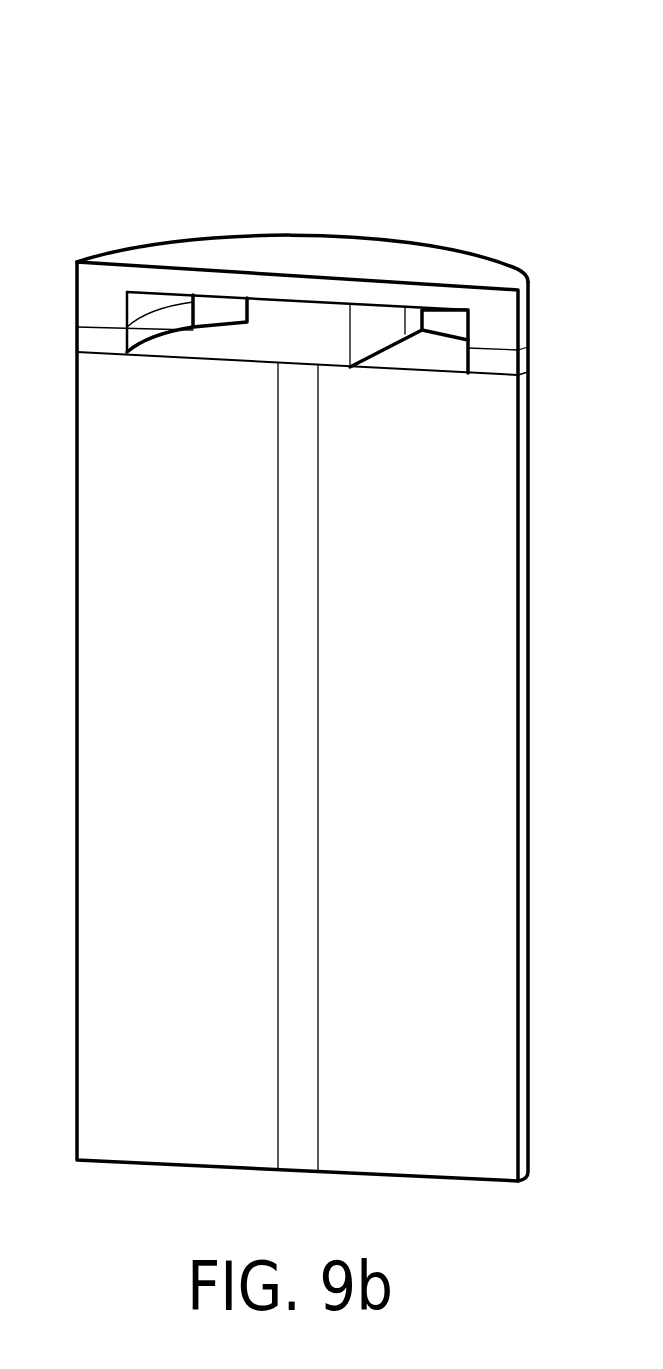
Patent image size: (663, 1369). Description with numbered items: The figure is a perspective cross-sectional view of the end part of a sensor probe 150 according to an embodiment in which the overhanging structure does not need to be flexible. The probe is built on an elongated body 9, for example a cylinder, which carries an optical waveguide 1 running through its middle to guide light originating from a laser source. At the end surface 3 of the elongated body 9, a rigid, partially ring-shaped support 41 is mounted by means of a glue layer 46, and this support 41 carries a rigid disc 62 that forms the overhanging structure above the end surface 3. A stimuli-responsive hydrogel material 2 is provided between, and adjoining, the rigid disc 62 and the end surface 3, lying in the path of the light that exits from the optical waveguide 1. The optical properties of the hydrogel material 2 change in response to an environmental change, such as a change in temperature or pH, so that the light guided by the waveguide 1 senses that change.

The sensor probe 150 is at (131, 101).
The elongated body 9 is at (103, 770).
The rigid disc 62 is at (287, 290).
The rigid, partially ring-shaped support 41 is at (103, 295).
The glue layer 46 is at (103, 340).
The optical waveguide 1 is at (297, 693).
The stimuli-responsive hydrogel material 2 is at (318, 343).
The end surface 3 is at (415, 358).